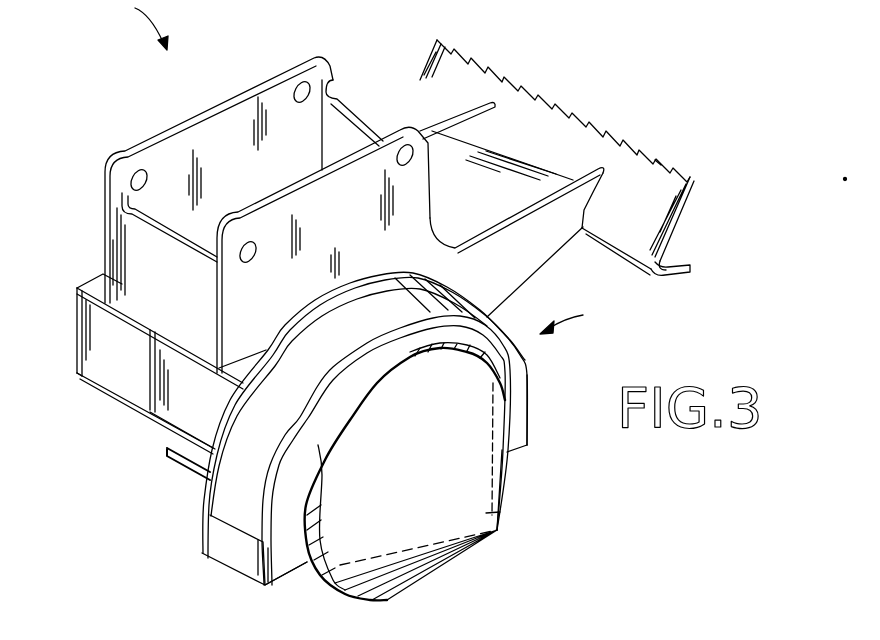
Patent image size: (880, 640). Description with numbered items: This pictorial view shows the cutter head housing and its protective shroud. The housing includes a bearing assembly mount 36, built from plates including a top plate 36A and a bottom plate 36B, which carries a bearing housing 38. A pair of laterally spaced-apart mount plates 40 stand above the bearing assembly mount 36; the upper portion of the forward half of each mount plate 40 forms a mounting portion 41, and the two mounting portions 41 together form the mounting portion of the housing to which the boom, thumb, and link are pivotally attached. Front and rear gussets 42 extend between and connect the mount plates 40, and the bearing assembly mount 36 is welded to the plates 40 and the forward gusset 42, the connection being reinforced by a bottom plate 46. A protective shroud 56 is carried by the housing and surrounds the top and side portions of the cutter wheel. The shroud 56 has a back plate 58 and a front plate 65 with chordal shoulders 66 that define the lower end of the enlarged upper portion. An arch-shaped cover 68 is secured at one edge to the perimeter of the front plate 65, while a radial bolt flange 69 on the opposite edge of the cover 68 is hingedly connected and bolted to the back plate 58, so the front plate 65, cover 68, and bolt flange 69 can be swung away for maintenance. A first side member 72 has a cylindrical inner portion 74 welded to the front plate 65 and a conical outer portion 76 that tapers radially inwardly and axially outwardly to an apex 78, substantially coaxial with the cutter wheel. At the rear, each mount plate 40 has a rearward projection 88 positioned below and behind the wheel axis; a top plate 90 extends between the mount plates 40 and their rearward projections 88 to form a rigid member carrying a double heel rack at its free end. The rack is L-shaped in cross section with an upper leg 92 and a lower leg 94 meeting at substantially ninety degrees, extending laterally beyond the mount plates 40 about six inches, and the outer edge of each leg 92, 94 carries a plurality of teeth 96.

The bearing assembly mount 36 is at (77, 318).
The top plate 36A is at (95, 277).
The bottom plate 36B is at (82, 383).
The bearing housing 38 is at (173, 408).
The mount plates 40 is at (262, 184).
The mounting portion 41 is at (247, 107).
The gussets 42 is at (190, 300).
The bottom plate 46 is at (182, 465).
The protective shroud 56 is at (577, 319).
The back plate 58 is at (200, 525).
The front plate 65 is at (527, 412).
The chordal shoulders 66 is at (527, 445).
The arch-shaped cover 68 is at (347, 349).
The radial bolt flange 69 is at (248, 400).
The first side member 72 is at (340, 587).
The cylindrical inner portion 74 is at (337, 447).
The conical outer portion 76 is at (487, 513).
The apex 78 is at (498, 532).
The rearward projection 88 is at (497, 70).
The top plate 90 is at (502, 204).
The upper leg 92 is at (680, 207).
The lower leg 94 is at (687, 273).
The teeth 96 is at (655, 160).